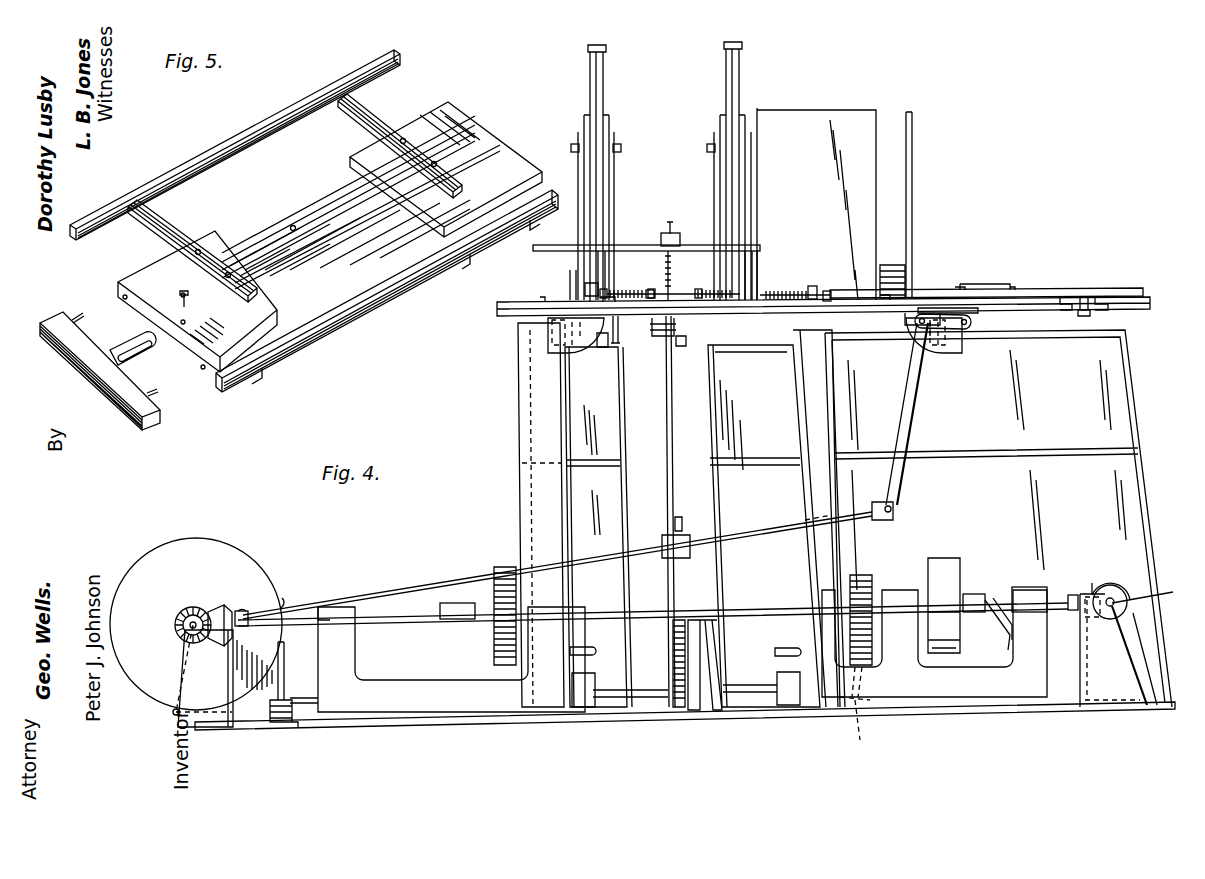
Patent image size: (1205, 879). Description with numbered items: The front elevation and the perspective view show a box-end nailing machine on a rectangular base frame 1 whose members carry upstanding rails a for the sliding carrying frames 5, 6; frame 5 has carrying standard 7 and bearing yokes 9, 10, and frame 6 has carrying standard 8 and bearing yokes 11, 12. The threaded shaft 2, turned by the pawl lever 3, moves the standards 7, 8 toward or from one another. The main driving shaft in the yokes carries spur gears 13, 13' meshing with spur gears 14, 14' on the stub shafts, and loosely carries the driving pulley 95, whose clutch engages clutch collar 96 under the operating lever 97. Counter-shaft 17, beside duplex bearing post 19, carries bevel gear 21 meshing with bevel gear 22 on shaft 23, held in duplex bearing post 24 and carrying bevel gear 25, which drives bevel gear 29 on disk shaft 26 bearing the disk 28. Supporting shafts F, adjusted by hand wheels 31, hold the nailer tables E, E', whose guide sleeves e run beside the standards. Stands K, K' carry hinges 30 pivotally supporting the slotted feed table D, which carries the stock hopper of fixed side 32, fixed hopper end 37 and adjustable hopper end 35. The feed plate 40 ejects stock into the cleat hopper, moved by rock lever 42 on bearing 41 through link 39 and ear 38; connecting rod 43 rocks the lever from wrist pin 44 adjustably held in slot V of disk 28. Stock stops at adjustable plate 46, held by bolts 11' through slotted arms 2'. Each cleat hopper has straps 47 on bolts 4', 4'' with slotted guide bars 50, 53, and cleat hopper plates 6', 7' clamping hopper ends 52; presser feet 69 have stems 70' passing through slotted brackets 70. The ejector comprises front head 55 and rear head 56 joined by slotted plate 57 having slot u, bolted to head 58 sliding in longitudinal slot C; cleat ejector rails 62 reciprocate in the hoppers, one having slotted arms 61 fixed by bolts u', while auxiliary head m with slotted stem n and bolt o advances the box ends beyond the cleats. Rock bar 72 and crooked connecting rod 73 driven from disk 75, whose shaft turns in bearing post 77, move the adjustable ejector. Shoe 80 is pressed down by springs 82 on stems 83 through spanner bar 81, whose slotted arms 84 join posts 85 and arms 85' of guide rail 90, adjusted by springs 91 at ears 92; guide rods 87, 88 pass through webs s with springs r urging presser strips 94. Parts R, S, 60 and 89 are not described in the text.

In FIG. 4, the base frame 1 is at (371, 725).
In FIG. 4, the threaded shaft 2 is at (253, 713).
In FIG. 4, the slotted arms 2' is at (498, 293).
In FIG. 4, the pawl lever 3 is at (283, 676).
In FIG. 4, the forward bolt 4' is at (562, 140).
In FIG. 4, the adjustable bolt 4'' is at (664, 140).
In FIG. 4, the sliding carrying frame 5 is at (934, 644).
In FIG. 4, the sliding carrying frame 6 is at (451, 660).
In FIG. 4, the cleat hopper plate 6' is at (658, 52).
In FIG. 4, the carrying standard 7 is at (816, 518).
In FIG. 4, the cleat hopper plate 7' is at (664, 53).
In FIG. 4, the carrying standard 8 is at (541, 515).
In FIG. 4, the bearing yoke 9 is at (900, 637).
In FIG. 4, the bearing yoke 10 is at (1029, 614).
In FIG. 4, the bearing yoke 11 is at (456, 585).
In FIG. 4, the bolts 11' is at (506, 279).
In FIG. 4, the bearing yoke 12 is at (333, 643).
In FIG. 4, the spur gear 13 is at (480, 565).
In FIG. 4, the spur gear 13' is at (898, 568).
In FIG. 4, the spur gear 14 is at (502, 593).
In FIG. 4, the spur gear 14' is at (858, 603).
In FIG. 4, the counter-shaft 17 is at (1146, 603).
In FIG. 4, the duplex bearing post 19 is at (1118, 650).
In FIG. 4, the bevel gear 21 is at (1110, 582).
In FIG. 4, the bevel gear 22 is at (1092, 590).
In FIG. 4, the shaft 23 is at (760, 608).
In FIG. 4, the duplex bearing post 24 is at (203, 676).
In FIG. 4, the bevel gear 25 is at (215, 606).
In FIG. 4, the disk shaft 26 is at (180, 620).
In FIG. 4, the disk 28 is at (243, 556).
In FIG. 4, the bevel gear 29 is at (197, 606).
In FIG. 4, the hinge 30 is at (1085, 305).
In FIG. 4, the adjusting hand wheel 31 is at (588, 654).
In FIG. 4, the outer fixed side 32 is at (856, 112).
In FIG. 4, the adjustable hopper end 35 is at (913, 134).
In FIG. 4, the hopper end 37 is at (756, 165).
In FIG. 4, the ear 38 is at (978, 310).
In FIG. 4, the link 39 is at (950, 324).
In FIG. 4, the feed plate 40 is at (1003, 290).
In FIG. 4, the bearing 41 is at (853, 709).
In FIG. 4, the rock lever 42 is at (912, 418).
In FIG. 4, the connecting rod 43 is at (428, 582).
In FIG. 4, the wrist pin 44 is at (250, 610).
In FIG. 4, the adjustable plate 46 is at (578, 132).
In FIG. 4, the straps 47 is at (748, 178).
In FIG. 4, the slotted guide bar 50 is at (585, 120).
In FIG. 4, the hopper end 52 is at (596, 58).
In FIG. 4, the slotted guide bar 53 is at (610, 138).
In FIG. 5, the front head 55 is at (197, 301).
In FIG. 5, the rear head 56 is at (446, 169).
In FIG. 5, the slotted plate 57 is at (324, 186).
In FIG. 4, the head 58 is at (654, 511).
In FIG. 4, the guide 60 is at (686, 345).
In FIG. 5, the slotted arms 61 is at (372, 124).
In FIG. 5, the cleat ejector rail 62 is at (282, 122).
In FIG. 4, the presser foot 69 is at (572, 285).
In FIG. 4, the slotted bracket 70 is at (572, 275).
In FIG. 4, the stem 70' is at (780, 226).
In FIG. 4, the rock bar 72 is at (673, 500).
In FIG. 4, the crooked connecting rod 73 is at (668, 583).
In FIG. 4, the disk 75 is at (679, 520).
In FIG. 4, the bearing post 77 is at (697, 712).
In FIG. 4, the shoe 80 is at (666, 288).
In FIG. 4, the spanner bar 81 is at (678, 241).
In FIG. 4, the springs 82 is at (662, 242).
In FIG. 4, the upstanding stems 83 is at (670, 224).
In FIG. 4, the slotted arms 84 is at (690, 249).
In FIG. 4, the posts 85 is at (565, 275).
In FIG. 4, the arms 85' is at (783, 263).
In FIG. 4, the guide rods 87 is at (618, 316).
In FIG. 4, the guide rods 88 is at (648, 335).
In FIG. 4, the block 89 is at (590, 296).
In FIG. 4, the adjustable guide rail 90 is at (762, 290).
In FIG. 4, the springs 91 is at (802, 294).
In FIG. 4, the ears 92 is at (826, 290).
In FIG. 4, the yielding presser strip 94 is at (622, 292).
In FIG. 4, the driving pulley 95 is at (946, 560).
In FIG. 4, the clutch collar 96 is at (975, 615).
In FIG. 4, the operating lever 97 is at (1002, 650).
In FIG. 4, the longitudinal slot C is at (575, 330).
In FIG. 4, the slotted feed table D is at (1046, 293).
In FIG. 4, the nailer table E is at (798, 313).
In FIG. 4, the nailer table E' is at (846, 321).
In FIG. 4, the supporting shaft F is at (570, 500).
In FIG. 4, the stand K is at (998, 518).
In FIG. 4, the stand K' is at (598, 527).
In FIG. 4, the rod R is at (282, 728).
In FIG. 4, the spring S is at (905, 268).
In FIG. 4, the slot V is at (295, 578).
In FIG. 4, the upstanding rails a is at (648, 690).
In FIG. 4, the guide sleeves e is at (550, 333).
In FIG. 5, the auxiliary head m is at (72, 322).
In FIG. 5, the slotted stem n is at (134, 338).
In FIG. 5, the bolt o is at (184, 290).
In FIG. 4, the springs r is at (700, 288).
In FIG. 4, the webs s is at (705, 298).
In FIG. 5, the slot u is at (279, 208).
In FIG. 5, the bolts u' is at (325, 194).